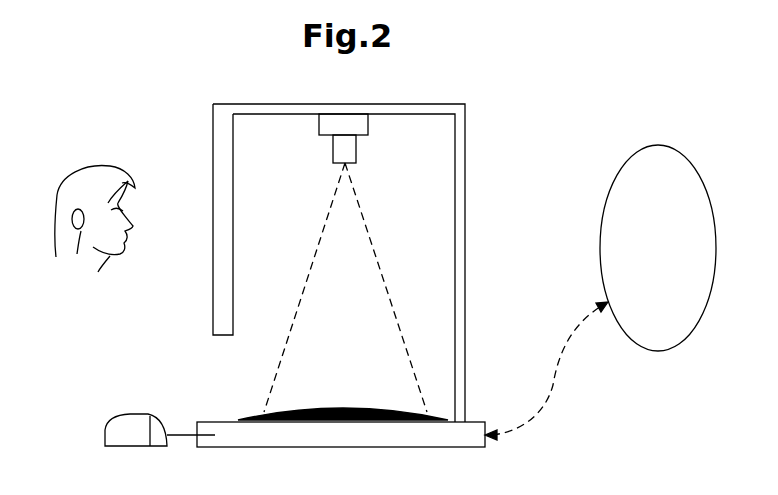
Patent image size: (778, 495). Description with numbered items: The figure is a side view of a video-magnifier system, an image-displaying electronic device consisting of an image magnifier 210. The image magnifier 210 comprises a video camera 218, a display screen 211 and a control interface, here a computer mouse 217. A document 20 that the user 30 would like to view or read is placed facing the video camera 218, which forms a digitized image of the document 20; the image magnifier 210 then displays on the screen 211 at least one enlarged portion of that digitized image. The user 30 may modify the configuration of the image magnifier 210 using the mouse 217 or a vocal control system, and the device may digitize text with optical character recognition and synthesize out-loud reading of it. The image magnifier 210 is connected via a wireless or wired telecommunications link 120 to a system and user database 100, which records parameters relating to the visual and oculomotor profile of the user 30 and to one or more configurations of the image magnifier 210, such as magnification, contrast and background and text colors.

The user 30 is at (90, 166).
The image magnifier 210 is at (345, 253).
The display screen 211 is at (213, 292).
The video camera 218 is at (347, 150).
The document 20 is at (252, 412).
The computer mouse 217 is at (120, 415).
The system and user database 100 is at (608, 228).
The telecommunications link 120 is at (553, 382).